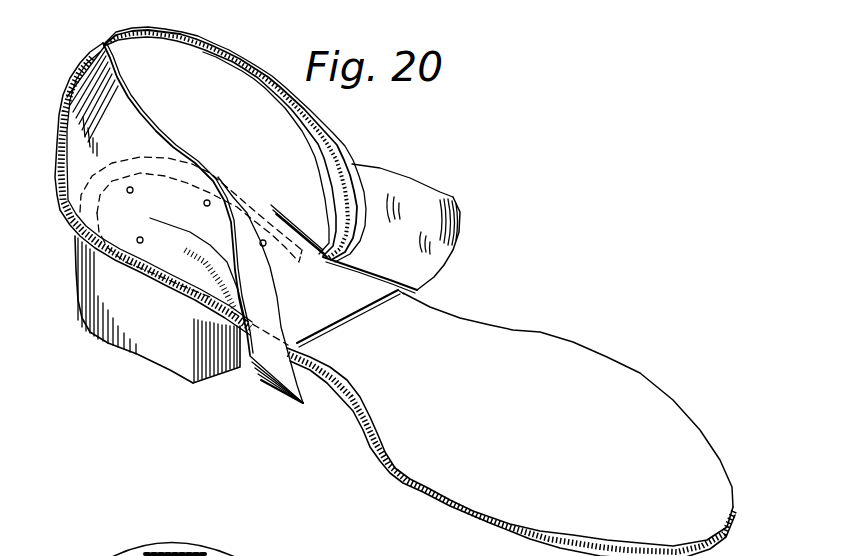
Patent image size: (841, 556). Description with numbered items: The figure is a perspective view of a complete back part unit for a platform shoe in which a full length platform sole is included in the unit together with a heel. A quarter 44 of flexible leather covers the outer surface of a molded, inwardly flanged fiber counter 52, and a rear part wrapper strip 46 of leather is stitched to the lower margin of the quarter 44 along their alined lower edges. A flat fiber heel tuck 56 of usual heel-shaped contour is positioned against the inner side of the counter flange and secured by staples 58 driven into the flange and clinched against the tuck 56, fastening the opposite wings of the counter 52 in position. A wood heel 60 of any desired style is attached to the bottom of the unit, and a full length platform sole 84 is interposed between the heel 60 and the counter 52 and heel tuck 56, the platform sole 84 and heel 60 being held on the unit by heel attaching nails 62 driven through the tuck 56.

The quarter 44 is at (187, 43).
The rear part wrapper strip 46 is at (60, 147).
The counter 52 is at (283, 137).
The heel tuck 56 is at (328, 306).
The staples 58 is at (293, 243).
The wood heel 60 is at (153, 348).
The heel attaching nails 62 is at (263, 247).
The platform sole 84 is at (607, 370).